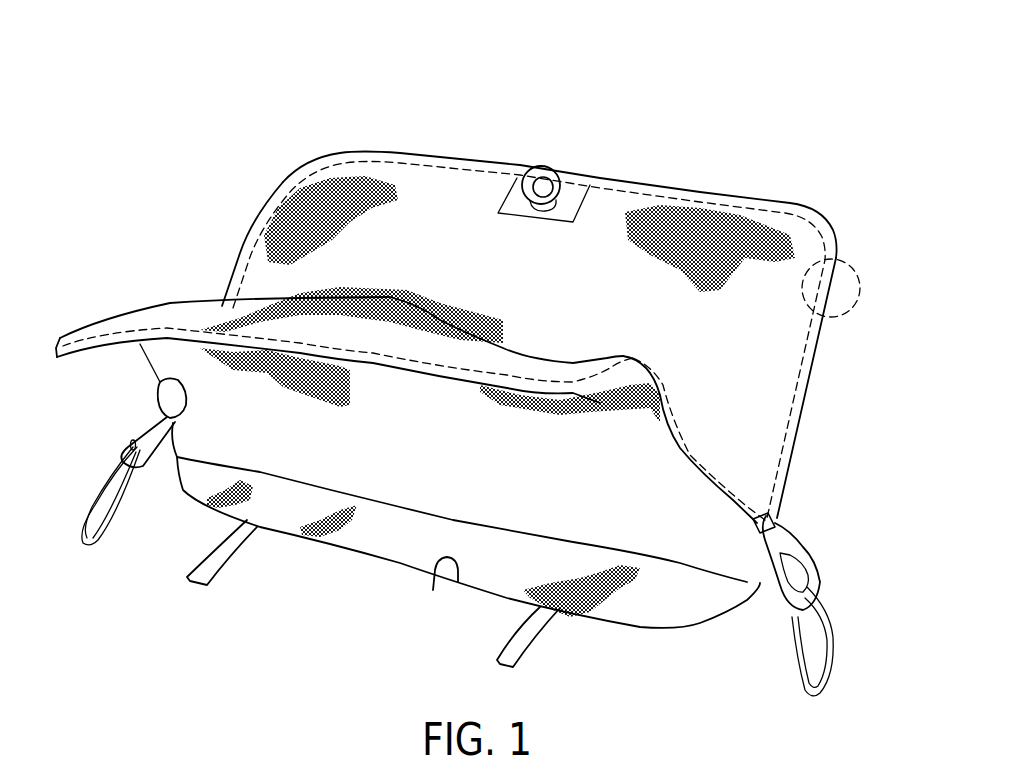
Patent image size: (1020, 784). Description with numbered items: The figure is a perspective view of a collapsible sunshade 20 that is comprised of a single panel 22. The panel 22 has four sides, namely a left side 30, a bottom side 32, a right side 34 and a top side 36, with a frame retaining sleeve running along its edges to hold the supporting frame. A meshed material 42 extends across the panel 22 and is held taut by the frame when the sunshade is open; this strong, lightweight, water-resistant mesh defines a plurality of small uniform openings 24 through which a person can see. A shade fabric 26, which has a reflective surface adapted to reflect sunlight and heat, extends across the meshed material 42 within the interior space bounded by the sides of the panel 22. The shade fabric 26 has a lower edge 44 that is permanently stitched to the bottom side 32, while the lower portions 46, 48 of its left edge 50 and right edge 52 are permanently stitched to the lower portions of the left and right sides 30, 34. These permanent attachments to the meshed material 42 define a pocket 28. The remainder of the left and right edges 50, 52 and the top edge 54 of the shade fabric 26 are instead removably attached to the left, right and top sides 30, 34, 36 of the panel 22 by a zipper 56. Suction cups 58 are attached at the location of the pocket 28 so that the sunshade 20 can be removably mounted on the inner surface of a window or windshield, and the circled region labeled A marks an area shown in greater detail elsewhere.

The sunshade 20 is at (687, 127).
The panel 22 is at (407, 180).
The openings 24 is at (315, 157).
The shade fabric 26 is at (535, 525).
The pocket 28 is at (347, 527).
The left side 30 is at (248, 230).
The bottom side 32 is at (297, 540).
The right side 34 is at (806, 411).
The top side 36 is at (712, 191).
The meshed material 42 is at (619, 312).
The lower edge 44 is at (433, 590).
The lower portion of left edge 46 is at (182, 467).
The lower portion of right edge 48 is at (730, 613).
The left edge 50 is at (110, 320).
The right edge 52 is at (670, 417).
The top edge 54 is at (125, 342).
The zipper 56 is at (665, 371).
The suction cups 58 is at (538, 180).
The detail area A is at (860, 257).